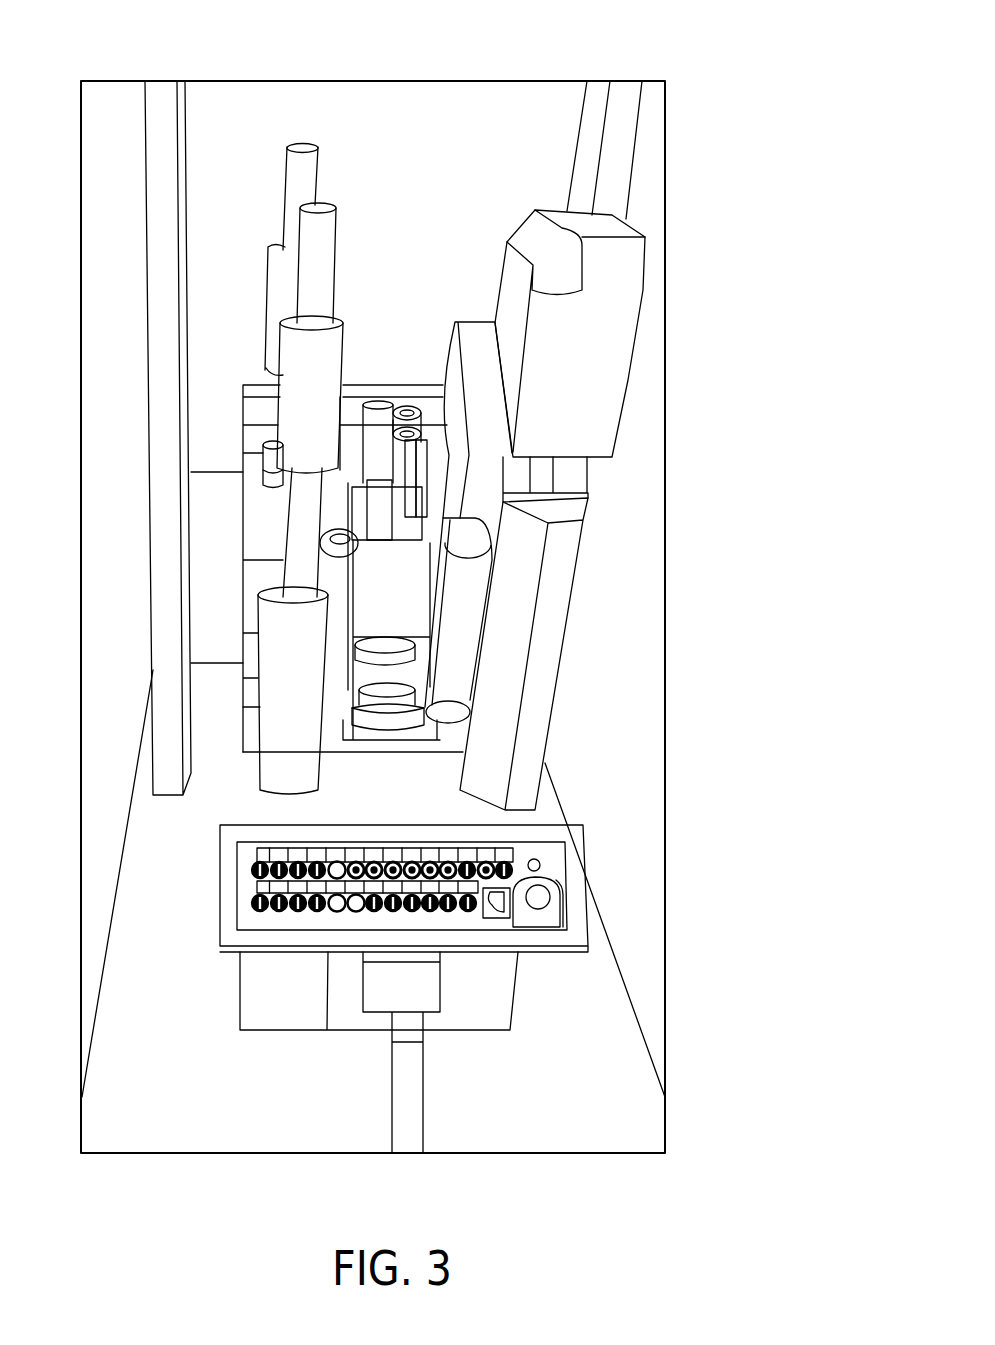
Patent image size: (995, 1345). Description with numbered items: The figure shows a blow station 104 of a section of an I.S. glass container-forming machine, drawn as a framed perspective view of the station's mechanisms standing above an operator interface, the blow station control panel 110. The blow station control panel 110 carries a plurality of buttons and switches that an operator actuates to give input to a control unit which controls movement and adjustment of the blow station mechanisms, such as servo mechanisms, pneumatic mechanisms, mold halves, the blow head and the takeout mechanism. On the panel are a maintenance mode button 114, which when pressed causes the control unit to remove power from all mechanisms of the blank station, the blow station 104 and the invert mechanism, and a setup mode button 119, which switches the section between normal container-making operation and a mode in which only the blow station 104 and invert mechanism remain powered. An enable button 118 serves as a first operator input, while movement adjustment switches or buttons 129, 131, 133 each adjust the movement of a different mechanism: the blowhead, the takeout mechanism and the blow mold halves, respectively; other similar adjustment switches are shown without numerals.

The blow station 104 is at (512, 120).
The blow station control panel 110 is at (457, 880).
The maintenance mode button 114 is at (545, 897).
The enable button 118 is at (507, 858).
The setup mode button 119 is at (467, 863).
The movement adjustment switch and/or button 129 is at (294, 911).
The movement adjustment switch and/or button 131 is at (400, 911).
The movement adjustment switch and/or button 133 is at (254, 910).